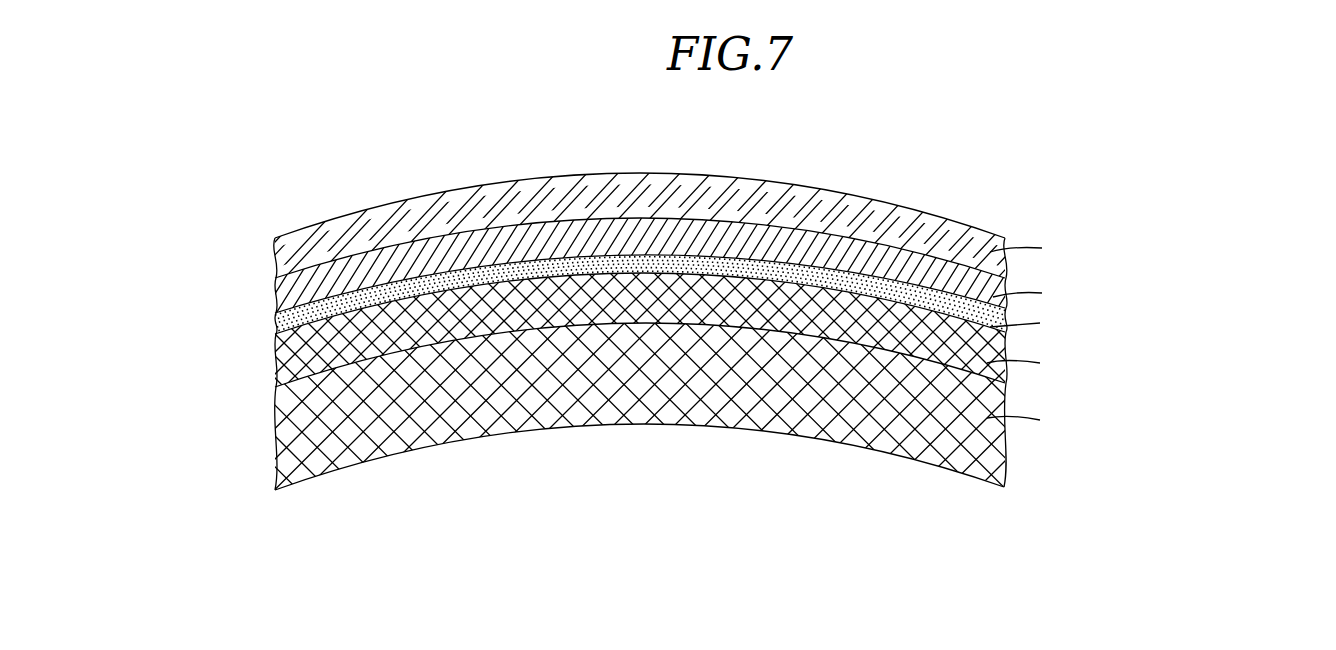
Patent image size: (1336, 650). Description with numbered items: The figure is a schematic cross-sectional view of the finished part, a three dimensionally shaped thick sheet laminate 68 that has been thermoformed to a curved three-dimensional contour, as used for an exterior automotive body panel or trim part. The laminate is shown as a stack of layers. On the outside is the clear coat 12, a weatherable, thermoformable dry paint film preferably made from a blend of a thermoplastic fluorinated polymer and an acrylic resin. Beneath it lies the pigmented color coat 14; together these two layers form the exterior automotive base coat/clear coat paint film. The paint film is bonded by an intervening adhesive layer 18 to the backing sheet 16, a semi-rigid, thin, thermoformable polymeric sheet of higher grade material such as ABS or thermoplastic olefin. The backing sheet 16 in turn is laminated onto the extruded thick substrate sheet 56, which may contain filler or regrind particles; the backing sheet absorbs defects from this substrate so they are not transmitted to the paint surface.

The three dimensionally shaped thick sheet laminate 68 is at (928, 187).
The clear coat 12 is at (297, 256).
The color coat 14 is at (285, 297).
The adhesive layer 18 is at (279, 329).
The backing sheet 16 is at (293, 365).
The substrate sheet 56 is at (307, 410).